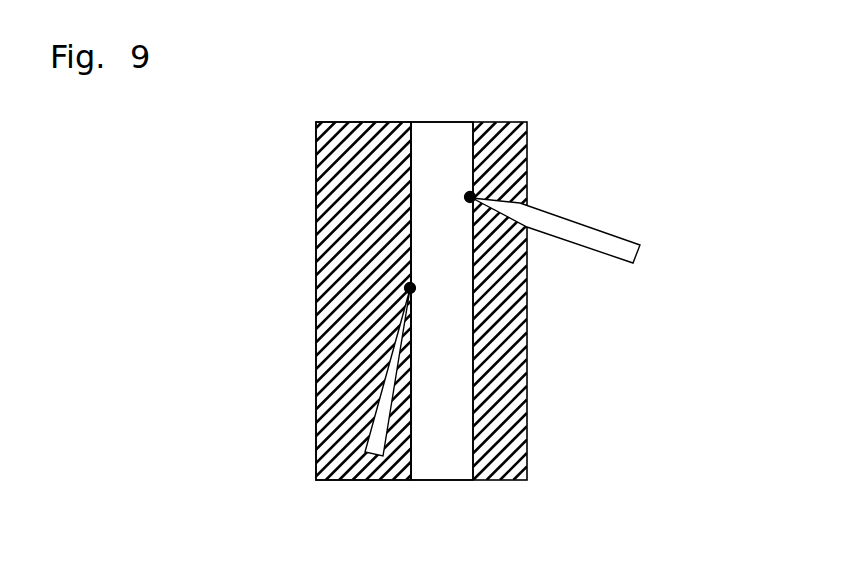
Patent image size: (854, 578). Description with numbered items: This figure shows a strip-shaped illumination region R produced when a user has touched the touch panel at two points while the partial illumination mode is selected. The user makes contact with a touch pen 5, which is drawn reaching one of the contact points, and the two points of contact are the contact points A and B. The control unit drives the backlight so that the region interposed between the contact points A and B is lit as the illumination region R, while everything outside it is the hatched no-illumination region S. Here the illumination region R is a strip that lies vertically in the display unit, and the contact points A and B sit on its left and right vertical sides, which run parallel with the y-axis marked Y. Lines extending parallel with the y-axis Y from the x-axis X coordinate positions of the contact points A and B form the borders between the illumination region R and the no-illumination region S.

The no-illumination region S is at (359, 128).
The illumination region R is at (452, 134).
The contact point A is at (503, 165).
The contact point B is at (406, 289).
The touch pen 5 is at (606, 236).
The crack X is at (380, 478).
The region Y is at (323, 427).